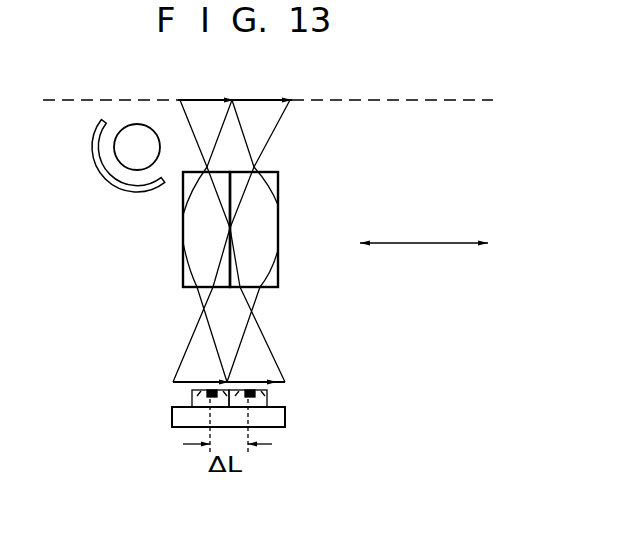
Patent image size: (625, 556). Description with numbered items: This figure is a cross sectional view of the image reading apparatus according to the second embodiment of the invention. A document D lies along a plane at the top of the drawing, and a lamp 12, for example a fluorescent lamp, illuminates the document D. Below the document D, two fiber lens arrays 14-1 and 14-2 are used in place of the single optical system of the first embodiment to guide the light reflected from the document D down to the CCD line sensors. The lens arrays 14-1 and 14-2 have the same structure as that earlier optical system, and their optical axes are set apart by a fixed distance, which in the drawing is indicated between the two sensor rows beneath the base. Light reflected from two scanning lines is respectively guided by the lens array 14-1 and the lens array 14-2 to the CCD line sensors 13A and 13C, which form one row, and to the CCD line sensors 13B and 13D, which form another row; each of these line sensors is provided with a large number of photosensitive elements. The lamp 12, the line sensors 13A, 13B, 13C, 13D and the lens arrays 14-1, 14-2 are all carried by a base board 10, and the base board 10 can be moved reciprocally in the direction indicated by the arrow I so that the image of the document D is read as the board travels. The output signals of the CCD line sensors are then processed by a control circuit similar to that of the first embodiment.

The base board 10 is at (276, 417).
The lamp 12 is at (118, 165).
The CCD line sensor 13A is at (316, 386).
The CCD line sensor 13B is at (146, 390).
The CCD line sensor 13C is at (266, 396).
The CCD line sensor 13D is at (195, 394).
The fiber lens array 14-1 is at (258, 208).
The fiber lens array 14-2 is at (196, 252).
The document D is at (421, 100).
The direction of reciprocal movement I is at (427, 230).